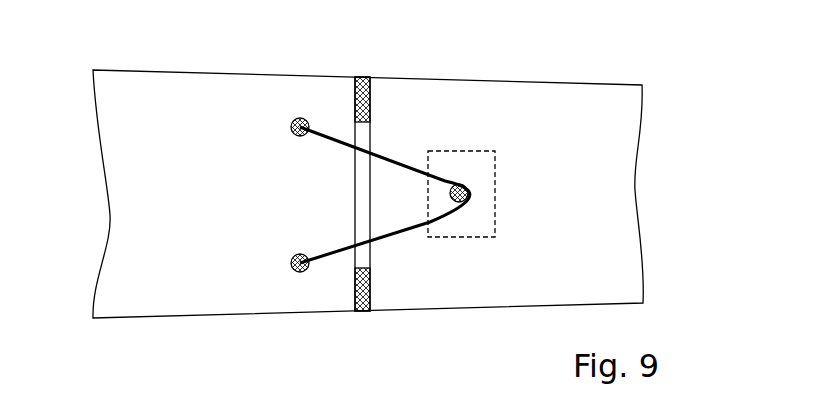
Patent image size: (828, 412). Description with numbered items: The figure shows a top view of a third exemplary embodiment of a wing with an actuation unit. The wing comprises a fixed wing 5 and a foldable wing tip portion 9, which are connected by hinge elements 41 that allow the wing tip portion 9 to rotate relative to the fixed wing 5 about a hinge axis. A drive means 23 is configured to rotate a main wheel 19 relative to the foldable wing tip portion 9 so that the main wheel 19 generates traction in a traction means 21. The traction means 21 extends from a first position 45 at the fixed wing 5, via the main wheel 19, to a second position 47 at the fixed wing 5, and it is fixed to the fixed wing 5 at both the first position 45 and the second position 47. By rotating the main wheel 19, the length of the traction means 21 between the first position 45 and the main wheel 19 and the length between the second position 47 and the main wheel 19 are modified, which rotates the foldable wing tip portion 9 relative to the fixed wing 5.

The fixed wing 5 is at (368, 194).
The foldable wing tip portion 9 is at (572, 189).
The main wheel 19 is at (468, 195).
The traction means 21 is at (400, 238).
The drive means 23 is at (475, 230).
The hinge element 41 is at (363, 77).
The first position 45 is at (291, 264).
The second position 47 is at (291, 128).